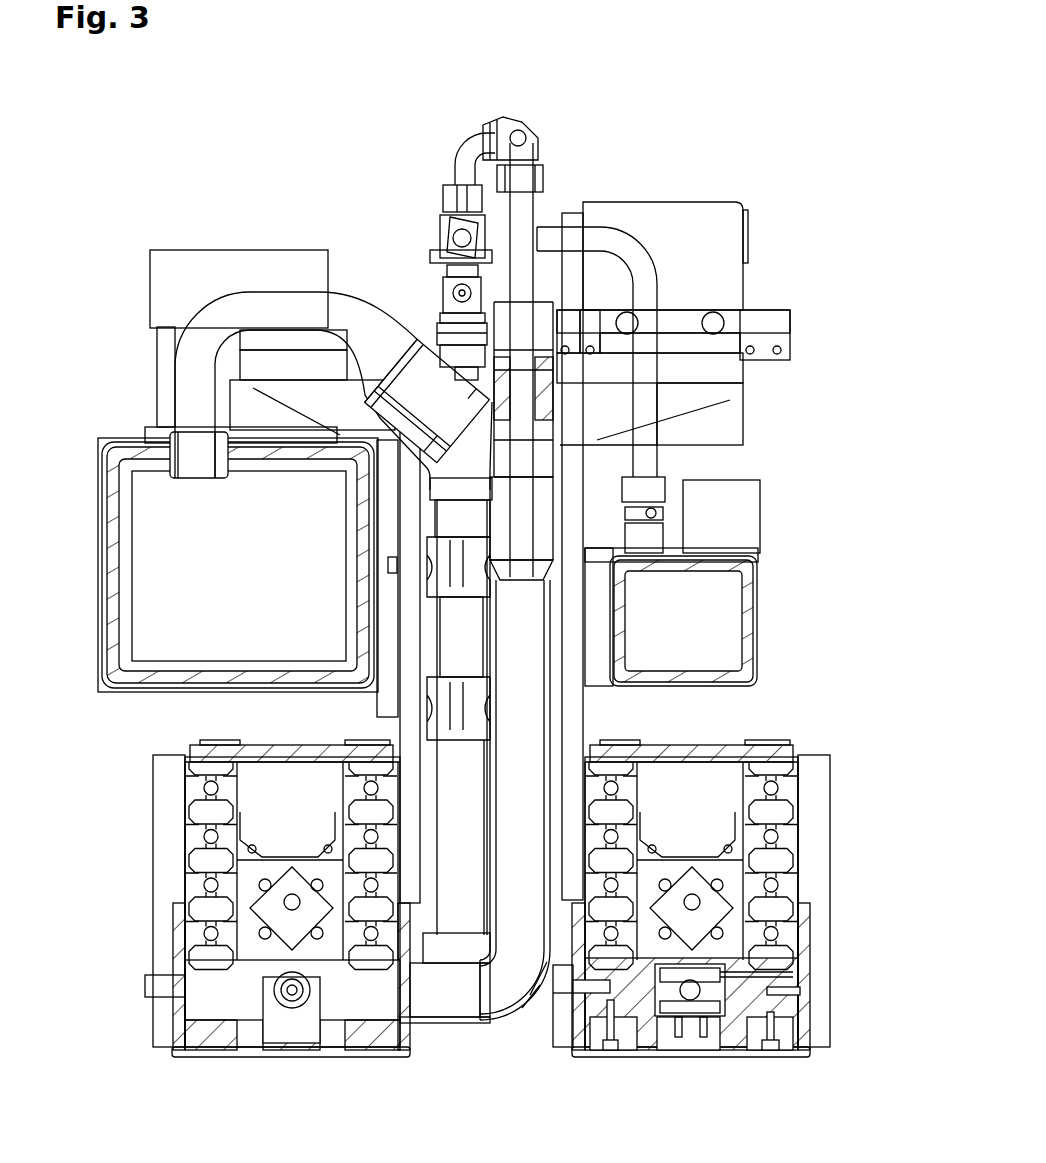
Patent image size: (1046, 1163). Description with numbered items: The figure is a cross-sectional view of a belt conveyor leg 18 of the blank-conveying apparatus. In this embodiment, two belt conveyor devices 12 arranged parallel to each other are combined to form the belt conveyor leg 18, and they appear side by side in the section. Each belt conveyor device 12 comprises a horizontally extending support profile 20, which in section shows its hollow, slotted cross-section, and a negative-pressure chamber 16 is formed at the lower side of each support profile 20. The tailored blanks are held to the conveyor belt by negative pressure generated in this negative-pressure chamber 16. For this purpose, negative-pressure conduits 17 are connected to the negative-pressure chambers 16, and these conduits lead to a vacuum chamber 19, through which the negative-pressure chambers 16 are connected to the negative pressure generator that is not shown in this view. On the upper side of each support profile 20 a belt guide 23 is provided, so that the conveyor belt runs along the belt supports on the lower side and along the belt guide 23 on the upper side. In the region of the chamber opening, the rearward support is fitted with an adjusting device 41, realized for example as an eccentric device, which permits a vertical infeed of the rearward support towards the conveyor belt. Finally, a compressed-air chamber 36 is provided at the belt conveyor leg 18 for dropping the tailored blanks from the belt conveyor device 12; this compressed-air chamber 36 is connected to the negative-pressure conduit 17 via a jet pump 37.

The belt conveyor device 12 is at (463, 857).
The negative-pressure chamber 16 is at (215, 987).
The negative-pressure conduit 17 is at (462, 637).
The belt conveyor leg 18 is at (722, 743).
The vacuum chamber 19 is at (253, 576).
The support profile 20 is at (200, 880).
The belt guide 23 is at (793, 753).
The compressed-air chamber 36 is at (699, 634).
The jet pump 37 is at (518, 520).
The adjusting device 41 is at (737, 990).